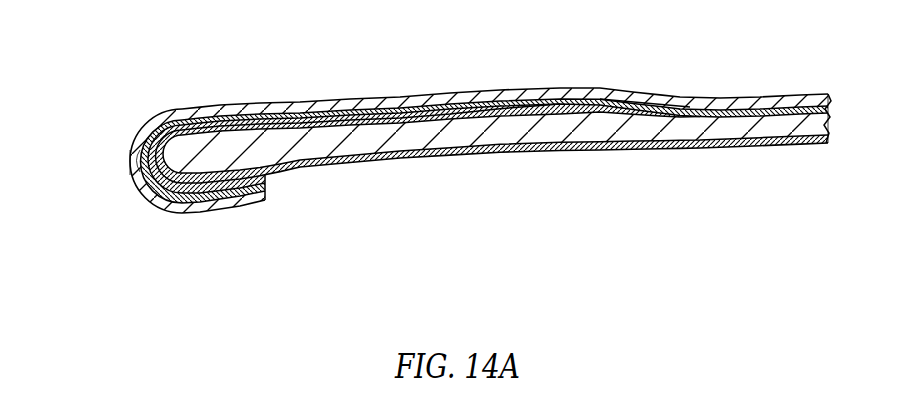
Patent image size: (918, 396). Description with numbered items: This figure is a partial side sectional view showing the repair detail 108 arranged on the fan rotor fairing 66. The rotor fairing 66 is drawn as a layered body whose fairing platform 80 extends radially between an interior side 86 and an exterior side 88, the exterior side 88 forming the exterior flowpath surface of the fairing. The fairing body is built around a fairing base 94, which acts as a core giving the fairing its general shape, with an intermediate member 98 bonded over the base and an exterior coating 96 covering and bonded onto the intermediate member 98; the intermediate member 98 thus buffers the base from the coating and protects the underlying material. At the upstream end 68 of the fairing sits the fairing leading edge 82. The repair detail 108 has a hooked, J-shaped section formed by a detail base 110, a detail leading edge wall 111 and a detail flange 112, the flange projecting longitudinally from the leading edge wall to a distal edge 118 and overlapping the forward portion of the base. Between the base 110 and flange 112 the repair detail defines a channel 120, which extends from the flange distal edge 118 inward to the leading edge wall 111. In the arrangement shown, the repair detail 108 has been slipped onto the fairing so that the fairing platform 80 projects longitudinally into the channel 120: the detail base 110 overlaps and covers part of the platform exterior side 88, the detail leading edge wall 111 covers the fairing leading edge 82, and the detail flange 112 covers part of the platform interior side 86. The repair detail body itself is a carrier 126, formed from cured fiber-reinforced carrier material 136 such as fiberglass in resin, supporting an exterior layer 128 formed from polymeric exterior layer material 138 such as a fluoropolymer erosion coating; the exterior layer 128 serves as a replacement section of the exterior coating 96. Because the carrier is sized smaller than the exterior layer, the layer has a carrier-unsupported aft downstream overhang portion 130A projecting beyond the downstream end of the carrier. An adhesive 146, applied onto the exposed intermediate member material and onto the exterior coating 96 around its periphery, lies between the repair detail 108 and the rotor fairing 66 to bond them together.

The repair detail 108 is at (179, 110).
The detail base 110 is at (252, 103).
The exterior layer 128 is at (360, 98).
The exterior layer material 138 is at (484, 151).
The carrier 126 is at (435, 98).
The carrier material 136 is at (354, 148).
The adhesive 146 is at (493, 100).
The downstream overhang portion 130A is at (633, 92).
The exterior coating 96 is at (763, 101).
The platform exterior side 88 is at (813, 93).
The fairing base 94 is at (820, 122).
The rotor fairing 66 is at (688, 156).
The intermediate member 98 is at (775, 147).
The platform interior side 86 is at (521, 155).
The fairing platform 80 is at (428, 167).
The channel 120 is at (265, 184).
The distal edge 118 is at (268, 201).
The detail flange 112 is at (235, 212).
The fairing upstream end 68 is at (131, 178).
The fairing leading edge 82 is at (139, 161).
The detail leading edge wall 111 is at (127, 163).